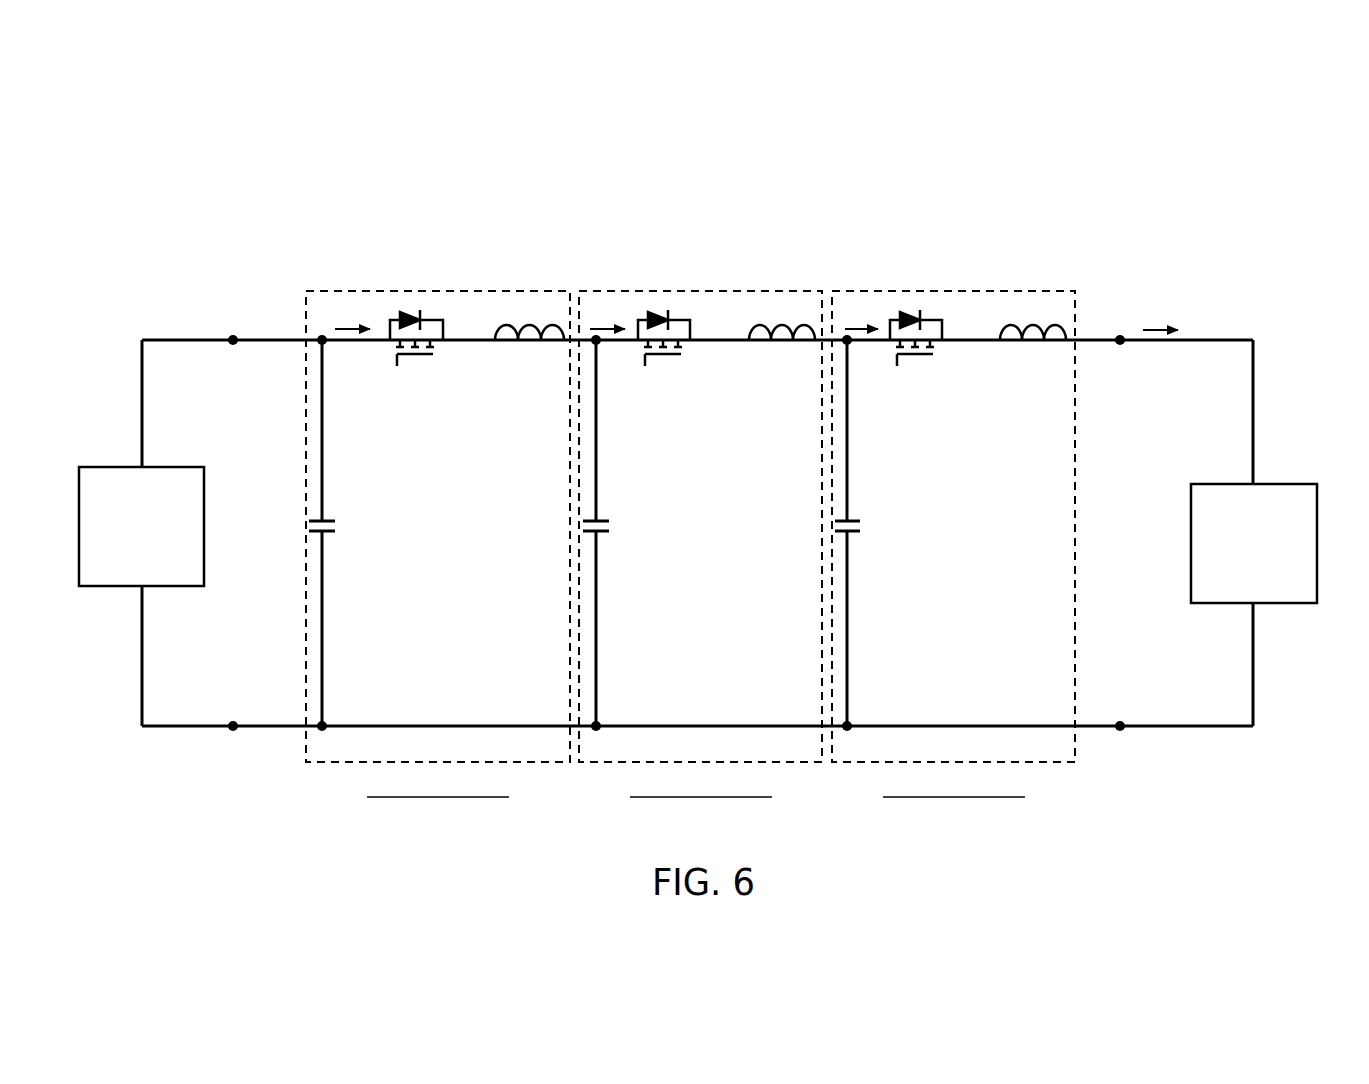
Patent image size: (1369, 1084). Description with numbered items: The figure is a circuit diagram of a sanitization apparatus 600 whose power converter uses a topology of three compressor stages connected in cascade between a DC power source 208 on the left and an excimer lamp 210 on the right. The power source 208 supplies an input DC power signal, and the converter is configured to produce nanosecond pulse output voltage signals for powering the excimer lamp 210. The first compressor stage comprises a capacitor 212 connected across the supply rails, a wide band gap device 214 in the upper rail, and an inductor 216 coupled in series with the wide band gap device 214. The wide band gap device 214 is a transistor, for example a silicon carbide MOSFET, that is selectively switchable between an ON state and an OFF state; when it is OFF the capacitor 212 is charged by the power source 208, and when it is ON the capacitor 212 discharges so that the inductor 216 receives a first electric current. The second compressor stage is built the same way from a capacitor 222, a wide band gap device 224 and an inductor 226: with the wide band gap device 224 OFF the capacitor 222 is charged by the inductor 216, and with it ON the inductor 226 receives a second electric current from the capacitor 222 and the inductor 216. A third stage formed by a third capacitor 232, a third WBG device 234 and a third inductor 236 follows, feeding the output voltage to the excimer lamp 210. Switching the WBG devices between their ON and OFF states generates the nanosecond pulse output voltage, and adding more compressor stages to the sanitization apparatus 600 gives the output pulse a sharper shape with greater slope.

The sanitization apparatus 600 is at (240, 182).
The power source 208 is at (92, 467).
The excimer lamp 210 is at (1295, 484).
The capacitor 212 is at (344, 506).
The wide band gap device 214 is at (415, 298).
The inductor 216 is at (530, 312).
The capacitor 222 is at (618, 506).
The wide band gap device 224 is at (668, 300).
The inductor 226 is at (780, 312).
The third capacitor 232 is at (873, 506).
The third WBG device 234 is at (920, 300).
The third inductor 236 is at (1032, 312).